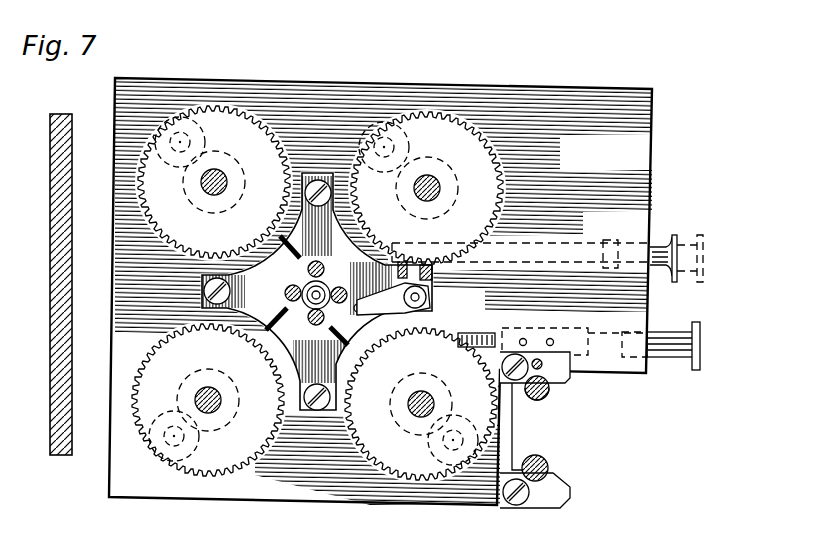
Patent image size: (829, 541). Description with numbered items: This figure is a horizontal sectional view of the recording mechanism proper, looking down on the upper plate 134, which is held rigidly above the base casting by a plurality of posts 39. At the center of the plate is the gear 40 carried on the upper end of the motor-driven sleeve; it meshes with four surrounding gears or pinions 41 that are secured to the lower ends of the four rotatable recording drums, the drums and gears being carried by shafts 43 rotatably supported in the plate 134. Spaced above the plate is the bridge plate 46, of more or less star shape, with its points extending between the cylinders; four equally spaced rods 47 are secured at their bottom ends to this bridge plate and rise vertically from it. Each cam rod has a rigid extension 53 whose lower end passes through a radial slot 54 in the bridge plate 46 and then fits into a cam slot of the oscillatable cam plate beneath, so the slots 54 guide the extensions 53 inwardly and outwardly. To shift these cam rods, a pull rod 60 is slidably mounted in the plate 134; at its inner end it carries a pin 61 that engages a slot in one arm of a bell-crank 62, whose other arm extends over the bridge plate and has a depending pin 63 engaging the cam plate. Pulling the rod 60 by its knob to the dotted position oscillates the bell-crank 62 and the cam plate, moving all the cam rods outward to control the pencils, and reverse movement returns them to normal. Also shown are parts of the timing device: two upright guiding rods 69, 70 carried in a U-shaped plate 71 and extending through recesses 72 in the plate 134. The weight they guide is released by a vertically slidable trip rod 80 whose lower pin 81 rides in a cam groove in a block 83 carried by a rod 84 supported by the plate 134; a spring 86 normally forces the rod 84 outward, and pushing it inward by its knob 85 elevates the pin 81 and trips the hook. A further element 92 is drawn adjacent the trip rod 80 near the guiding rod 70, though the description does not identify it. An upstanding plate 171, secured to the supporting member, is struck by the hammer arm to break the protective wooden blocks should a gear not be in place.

The upper plate 134 is at (193, 500).
The upstanding plate 171 is at (52, 218).
The gears or pinions 41 is at (317, 293).
The shafts 43 is at (211, 196).
The posts 39 is at (168, 163).
The gear 40 is at (350, 357).
The bridge plate 46 is at (303, 407).
The rods 47 is at (308, 270).
The extension 53 is at (303, 256).
The radial slot 54 is at (337, 337).
The depending pin 63 is at (356, 312).
The bell-crank 62 is at (430, 280).
The pin 61 is at (405, 247).
The pull rod 60 is at (583, 250).
The spring 86 is at (479, 334).
The block 83 is at (567, 326).
The rod 84 is at (608, 352).
The knob 85 is at (701, 352).
The trip rod 80 is at (570, 378).
The pin 81 is at (542, 365).
The guiding rod 70 is at (549, 389).
The roller 92 is at (533, 396).
The recesses 72 is at (520, 430).
The guiding rod 69 is at (548, 465).
The U-shaped plate 71 is at (548, 505).